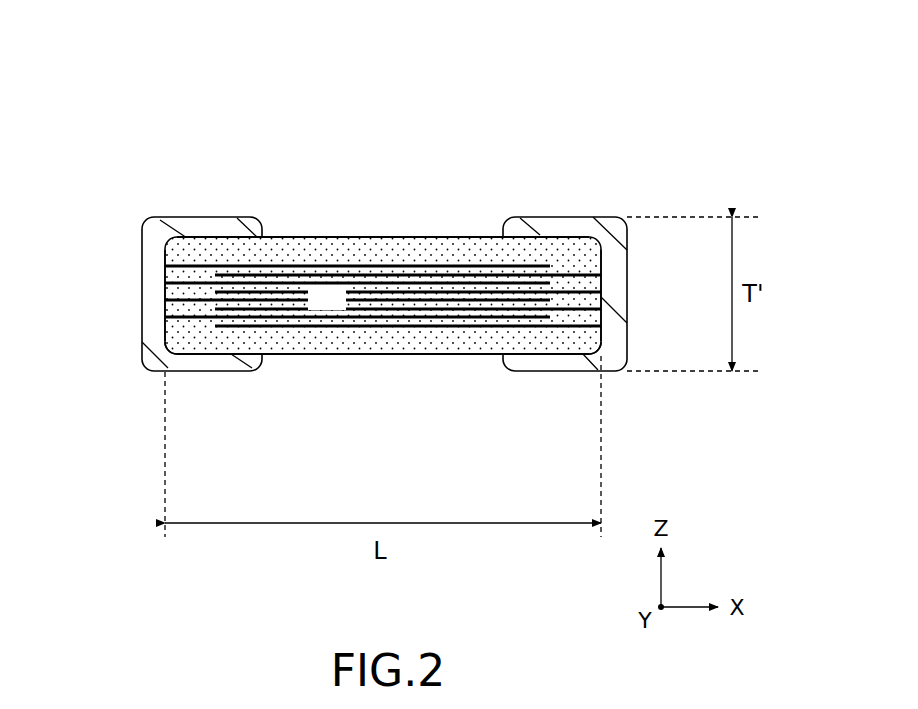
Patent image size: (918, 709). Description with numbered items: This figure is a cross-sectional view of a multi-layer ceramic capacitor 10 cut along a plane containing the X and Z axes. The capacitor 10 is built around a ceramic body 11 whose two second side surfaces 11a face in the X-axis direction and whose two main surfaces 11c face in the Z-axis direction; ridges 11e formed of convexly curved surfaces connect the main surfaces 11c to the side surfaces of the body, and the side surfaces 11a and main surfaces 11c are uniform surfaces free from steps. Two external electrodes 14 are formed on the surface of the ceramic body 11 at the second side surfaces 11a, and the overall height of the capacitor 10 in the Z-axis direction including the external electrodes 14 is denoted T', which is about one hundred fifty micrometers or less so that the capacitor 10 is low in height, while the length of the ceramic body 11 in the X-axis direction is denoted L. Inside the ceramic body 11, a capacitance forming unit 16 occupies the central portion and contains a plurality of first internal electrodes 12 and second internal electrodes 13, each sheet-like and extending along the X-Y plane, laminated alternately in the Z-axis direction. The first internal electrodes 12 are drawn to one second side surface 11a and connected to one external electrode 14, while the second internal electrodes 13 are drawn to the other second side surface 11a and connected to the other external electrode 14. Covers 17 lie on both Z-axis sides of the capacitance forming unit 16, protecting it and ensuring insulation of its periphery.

The multi-layer ceramic capacitor 10 is at (358, 230).
The ceramic body 11 is at (358, 292).
The second side surfaces 11a is at (165, 293).
The main surfaces 11c is at (480, 236).
The ridges 11e is at (165, 350).
The first internal electrodes 12 is at (320, 317).
The second internal electrodes 13 is at (405, 326).
The external electrodes 14 is at (160, 219).
The capacitance forming unit 16 is at (327, 298).
The covers 17 is at (448, 246).